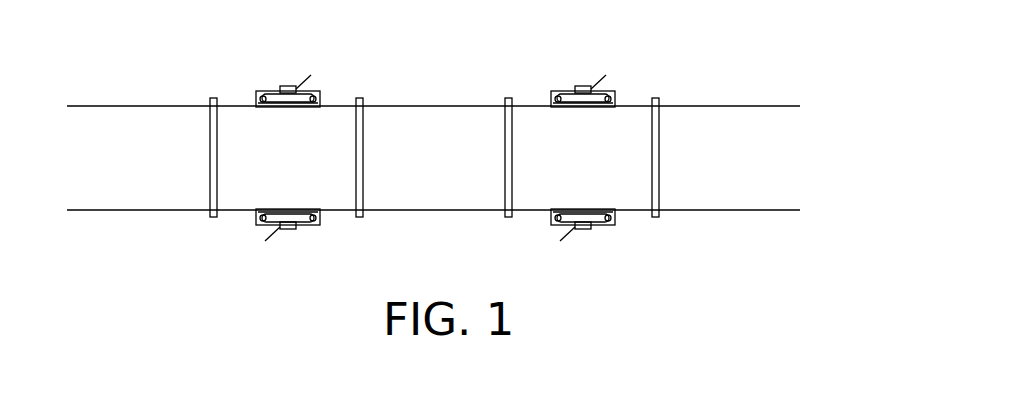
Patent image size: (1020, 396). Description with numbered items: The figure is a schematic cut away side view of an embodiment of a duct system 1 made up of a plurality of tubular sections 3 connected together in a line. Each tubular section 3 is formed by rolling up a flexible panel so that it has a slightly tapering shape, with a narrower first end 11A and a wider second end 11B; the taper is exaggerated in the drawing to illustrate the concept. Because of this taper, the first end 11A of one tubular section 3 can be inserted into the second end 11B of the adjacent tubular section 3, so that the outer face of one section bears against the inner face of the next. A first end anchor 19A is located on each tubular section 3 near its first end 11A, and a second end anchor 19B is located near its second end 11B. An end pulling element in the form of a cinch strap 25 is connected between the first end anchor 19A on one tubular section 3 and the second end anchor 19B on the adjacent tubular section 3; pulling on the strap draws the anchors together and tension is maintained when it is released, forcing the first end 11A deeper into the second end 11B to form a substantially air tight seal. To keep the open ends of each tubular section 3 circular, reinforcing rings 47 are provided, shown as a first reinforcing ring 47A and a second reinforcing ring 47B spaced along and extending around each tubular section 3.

The duct system 1 is at (442, 138).
The tubular section 3 is at (717, 210).
The first end 11A is at (307, 205).
The second end 11B is at (587, 126).
The first end anchor 19A is at (550, 102).
The second end anchor 19B is at (614, 100).
The cinch strap 25 is at (582, 86).
The reinforcing ring 47 is at (147, 180).
The first reinforcing ring 47A is at (212, 218).
The second reinforcing ring 47B is at (365, 185).